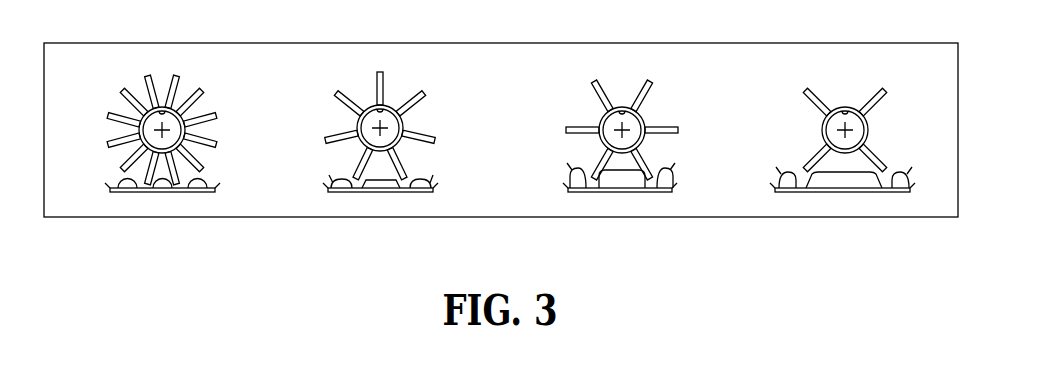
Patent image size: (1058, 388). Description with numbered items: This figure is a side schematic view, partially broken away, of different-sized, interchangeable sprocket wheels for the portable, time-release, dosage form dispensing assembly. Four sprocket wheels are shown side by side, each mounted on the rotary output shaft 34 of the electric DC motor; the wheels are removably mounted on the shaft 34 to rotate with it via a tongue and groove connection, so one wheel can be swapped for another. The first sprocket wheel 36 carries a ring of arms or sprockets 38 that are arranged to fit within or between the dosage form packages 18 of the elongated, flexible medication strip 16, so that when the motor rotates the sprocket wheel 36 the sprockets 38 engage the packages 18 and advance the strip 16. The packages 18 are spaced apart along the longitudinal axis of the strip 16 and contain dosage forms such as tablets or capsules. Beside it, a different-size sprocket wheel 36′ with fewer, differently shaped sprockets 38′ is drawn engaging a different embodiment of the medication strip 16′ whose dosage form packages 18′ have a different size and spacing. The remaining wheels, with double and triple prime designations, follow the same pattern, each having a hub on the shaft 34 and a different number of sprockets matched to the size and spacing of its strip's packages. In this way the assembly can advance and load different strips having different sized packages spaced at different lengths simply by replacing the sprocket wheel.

The medication strip 16 is at (186, 200).
The dosage form packages 18 is at (122, 195).
The rotary output shaft 34 is at (168, 108).
The sprocket wheel 36 is at (124, 132).
The sprockets 38 is at (123, 91).
The medication strip 16′ is at (388, 200).
The dosage form packages 18′ is at (333, 188).
The sprocket wheel 36′ is at (344, 124).
The sprockets 38′ is at (378, 72).